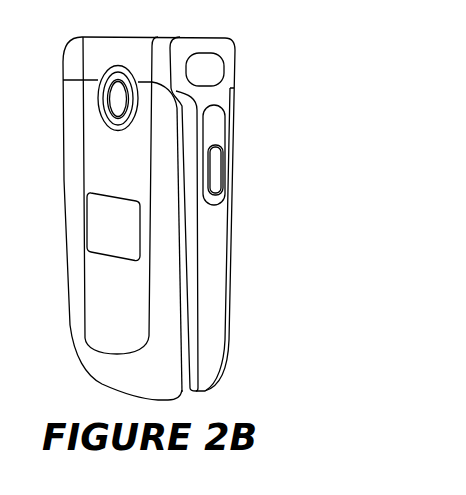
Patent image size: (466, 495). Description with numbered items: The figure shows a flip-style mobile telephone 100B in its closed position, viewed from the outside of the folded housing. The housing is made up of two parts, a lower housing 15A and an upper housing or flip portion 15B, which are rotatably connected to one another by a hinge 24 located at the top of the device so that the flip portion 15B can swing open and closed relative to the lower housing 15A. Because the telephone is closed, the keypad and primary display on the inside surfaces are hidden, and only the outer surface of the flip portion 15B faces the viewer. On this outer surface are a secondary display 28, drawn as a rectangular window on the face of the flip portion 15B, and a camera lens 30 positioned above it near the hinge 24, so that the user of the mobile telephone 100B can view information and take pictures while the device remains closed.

The lower housing 15A is at (210, 303).
The flip portion 15B is at (75, 300).
The hinge 24 is at (205, 68).
The secondary display 28 is at (98, 224).
The camera lens 30 is at (115, 98).
The flip-style mobile telephone 100B is at (222, 215).